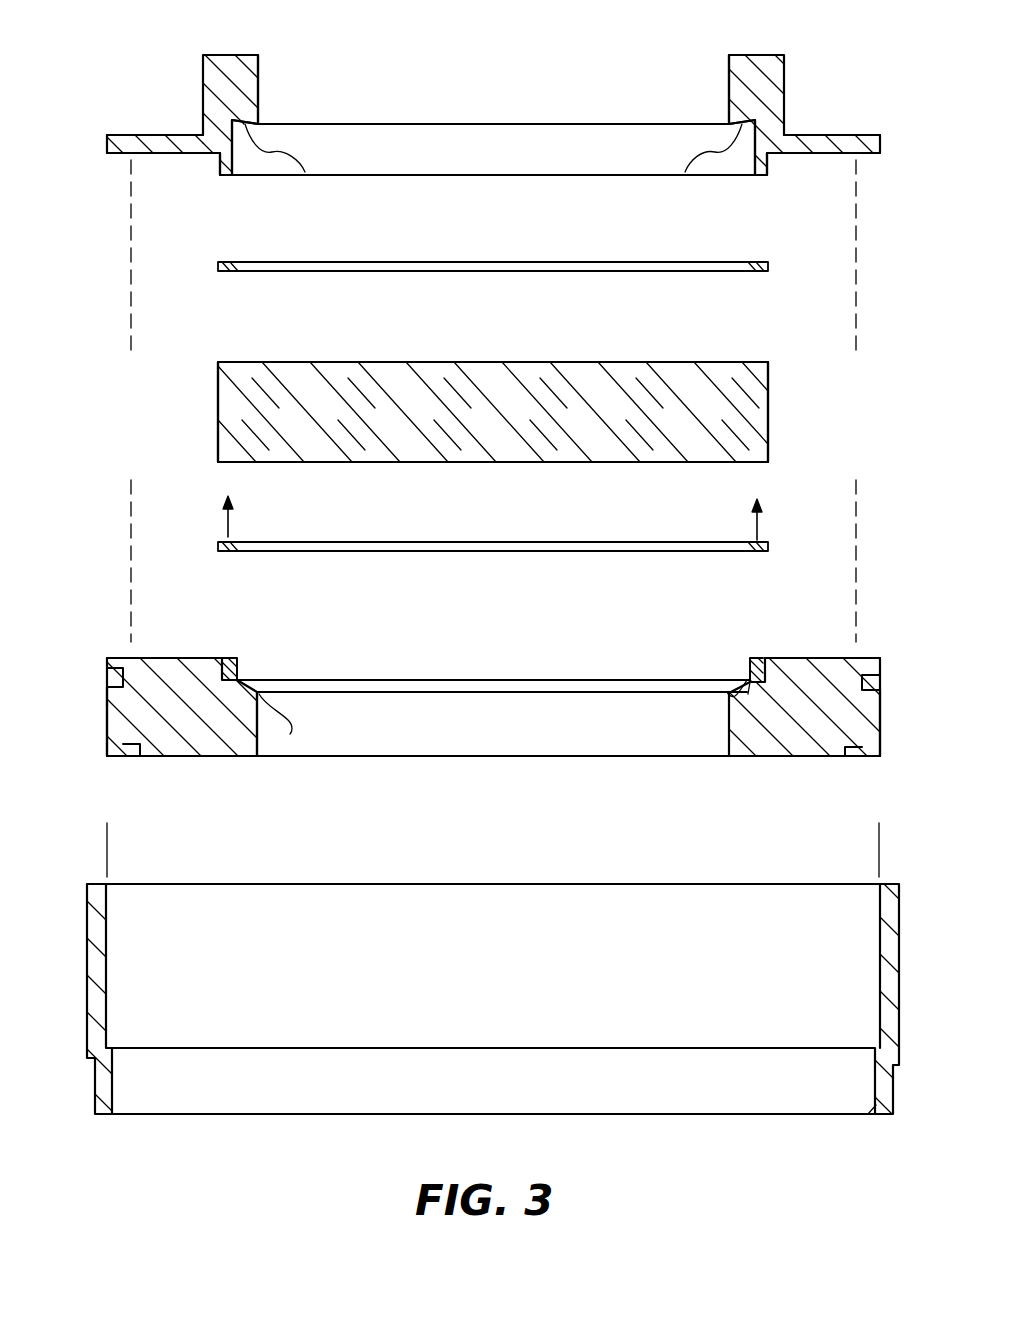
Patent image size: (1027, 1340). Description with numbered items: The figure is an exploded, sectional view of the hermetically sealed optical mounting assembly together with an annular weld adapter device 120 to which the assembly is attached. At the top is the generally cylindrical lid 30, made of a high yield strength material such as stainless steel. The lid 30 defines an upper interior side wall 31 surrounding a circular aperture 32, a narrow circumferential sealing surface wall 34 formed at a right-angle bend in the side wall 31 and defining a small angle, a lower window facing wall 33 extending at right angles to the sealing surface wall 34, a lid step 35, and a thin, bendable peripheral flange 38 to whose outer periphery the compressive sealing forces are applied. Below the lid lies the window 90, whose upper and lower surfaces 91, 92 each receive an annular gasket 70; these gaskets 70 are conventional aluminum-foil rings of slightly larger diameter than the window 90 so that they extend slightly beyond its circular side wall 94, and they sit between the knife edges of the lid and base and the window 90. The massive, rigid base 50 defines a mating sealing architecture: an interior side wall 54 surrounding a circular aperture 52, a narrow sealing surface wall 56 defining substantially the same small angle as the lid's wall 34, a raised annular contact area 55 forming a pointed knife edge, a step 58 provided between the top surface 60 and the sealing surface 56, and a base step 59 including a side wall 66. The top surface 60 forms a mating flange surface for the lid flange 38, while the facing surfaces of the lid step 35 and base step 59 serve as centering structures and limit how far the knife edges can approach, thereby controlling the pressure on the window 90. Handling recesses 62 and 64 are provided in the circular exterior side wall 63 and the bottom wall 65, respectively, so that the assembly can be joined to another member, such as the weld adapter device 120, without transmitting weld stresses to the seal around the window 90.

The lid 30 is at (212, 70).
The upper interior side wall 31 is at (258, 78).
The circular aperture 32 is at (493, 149).
The lower window facing wall 33 is at (236, 175).
The sealing surface wall 34 is at (305, 172).
The lid step 35 is at (221, 158).
The peripheral flange 38 is at (160, 134).
The annular gasket 70 is at (218, 266).
The window 90 is at (228, 445).
The upper surface of window 91 is at (477, 362).
The lower surface of window 92 is at (488, 462).
The circular side wall of window 94 is at (218, 388).
The base 50 is at (120, 707).
The circular aperture 52 is at (502, 724).
The interior side wall 54 is at (257, 756).
The annular contact area 55 is at (290, 734).
The sealing surface wall 56 is at (727, 680).
The step 58 is at (231, 657).
The base step 59 is at (749, 680).
The top surface 60 is at (203, 658).
The handling recess 62 is at (110, 679).
The exterior side wall 63 is at (107, 740).
The handling recess 64 is at (133, 757).
The bottom wall 65 is at (196, 757).
The side wall 66 is at (254, 680).
The weld adapter device 120 is at (872, 1116).